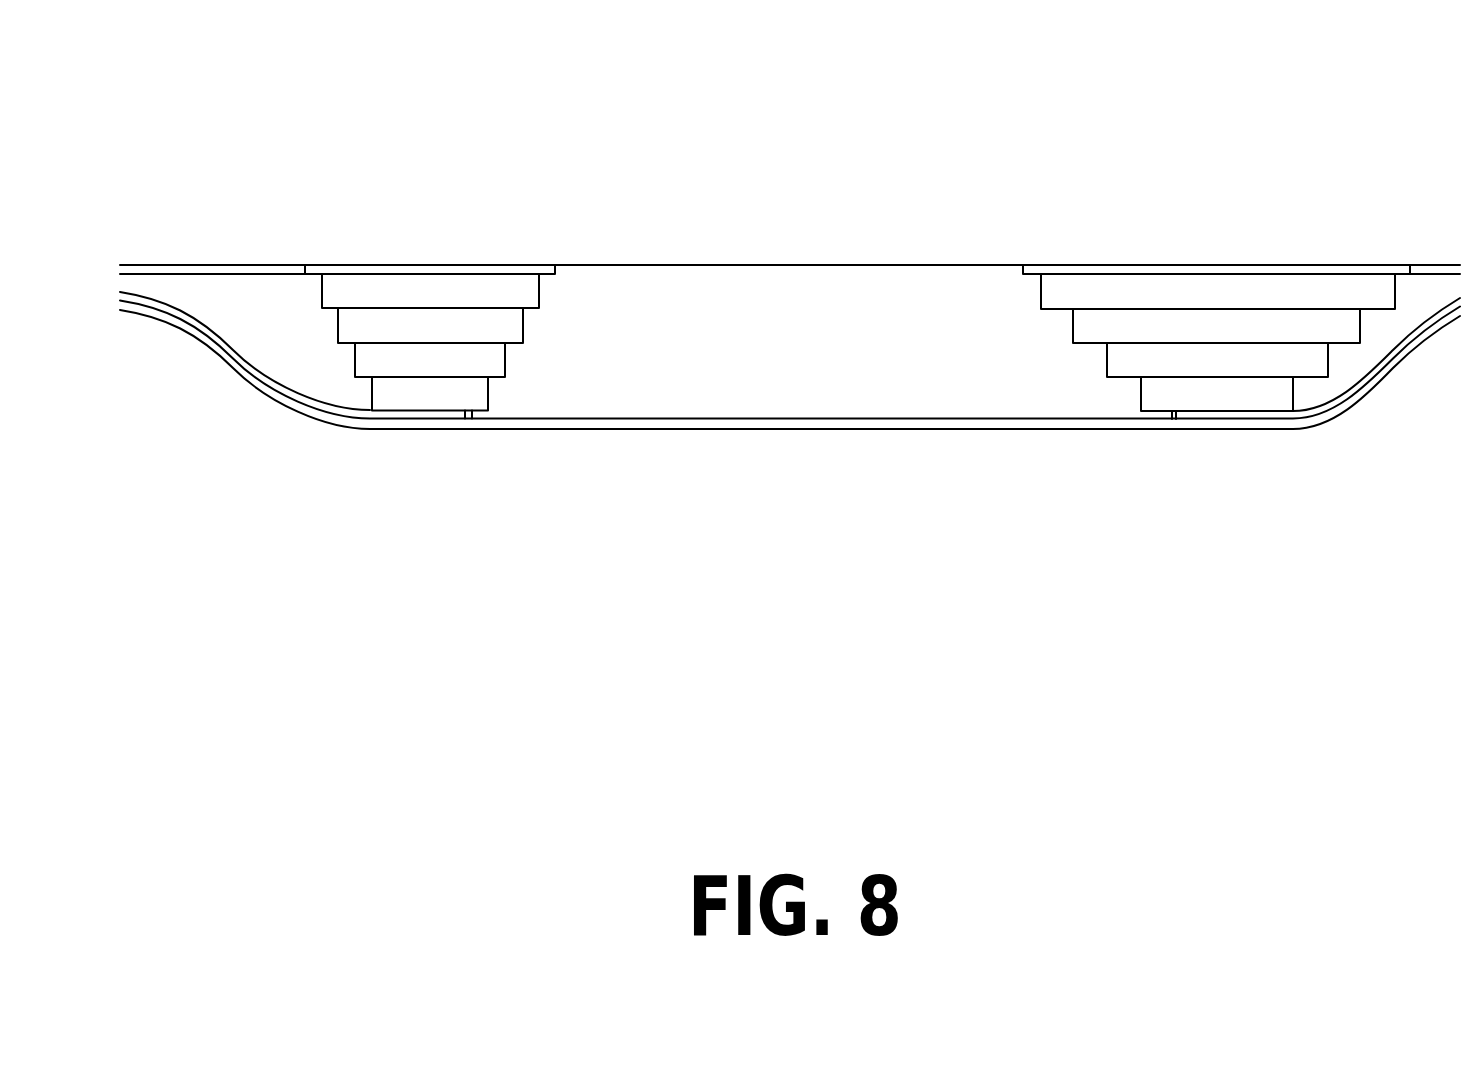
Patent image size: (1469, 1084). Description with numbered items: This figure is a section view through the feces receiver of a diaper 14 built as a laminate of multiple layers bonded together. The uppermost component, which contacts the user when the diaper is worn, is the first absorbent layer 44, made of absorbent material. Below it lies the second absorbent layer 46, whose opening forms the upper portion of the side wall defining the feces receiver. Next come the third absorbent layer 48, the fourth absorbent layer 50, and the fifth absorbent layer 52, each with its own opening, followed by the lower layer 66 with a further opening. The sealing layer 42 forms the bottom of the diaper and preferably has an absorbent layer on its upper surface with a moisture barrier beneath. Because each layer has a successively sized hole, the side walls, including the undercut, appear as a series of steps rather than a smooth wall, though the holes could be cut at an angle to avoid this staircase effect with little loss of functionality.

The panel 14 is at (800, 349).
The sealing layer 42 is at (580, 423).
The first absorbent layer 44 is at (378, 265).
The second absorbent layer 46 is at (342, 287).
The third absorbent layer 48 is at (379, 313).
The fourth absorbent layer 50 is at (405, 349).
The fifth absorbent layer 52 is at (449, 382).
The lower layer 66 is at (463, 412).